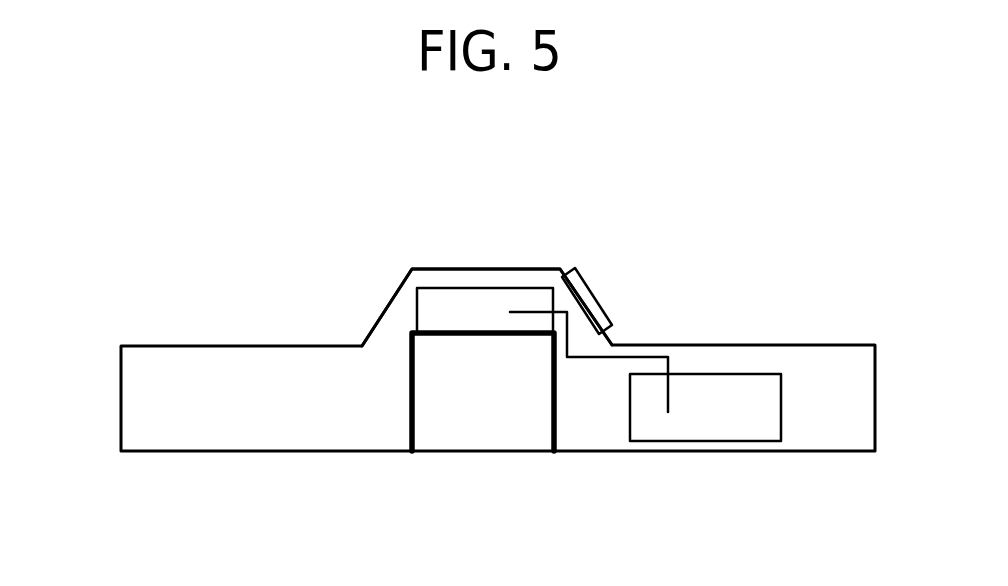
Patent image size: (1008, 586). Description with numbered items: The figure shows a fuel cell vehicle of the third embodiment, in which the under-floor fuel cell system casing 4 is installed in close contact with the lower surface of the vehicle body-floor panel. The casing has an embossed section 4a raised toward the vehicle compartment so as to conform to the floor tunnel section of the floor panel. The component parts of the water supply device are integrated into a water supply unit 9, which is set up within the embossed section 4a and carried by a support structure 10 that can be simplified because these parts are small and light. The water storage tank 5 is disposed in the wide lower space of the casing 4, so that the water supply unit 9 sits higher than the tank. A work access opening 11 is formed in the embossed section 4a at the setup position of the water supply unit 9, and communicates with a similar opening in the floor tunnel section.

The under-floor fuel cell system casing 4 is at (120, 400).
The embossed section 4a is at (435, 268).
The water storage tank 5 is at (710, 442).
The water supply unit 9 is at (500, 287).
The support structure 10 is at (410, 407).
The work access opening 11 is at (585, 278).